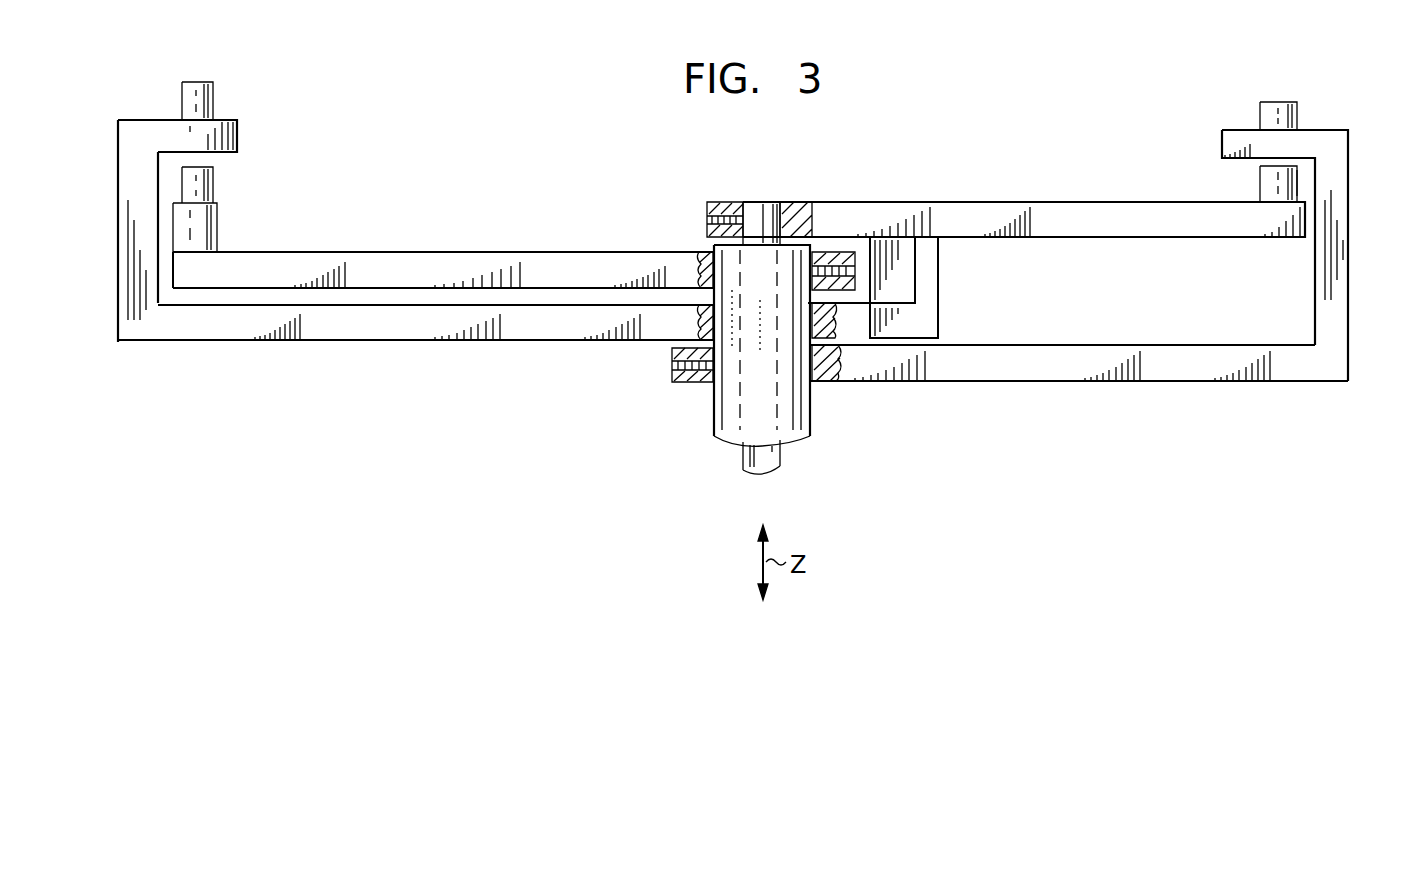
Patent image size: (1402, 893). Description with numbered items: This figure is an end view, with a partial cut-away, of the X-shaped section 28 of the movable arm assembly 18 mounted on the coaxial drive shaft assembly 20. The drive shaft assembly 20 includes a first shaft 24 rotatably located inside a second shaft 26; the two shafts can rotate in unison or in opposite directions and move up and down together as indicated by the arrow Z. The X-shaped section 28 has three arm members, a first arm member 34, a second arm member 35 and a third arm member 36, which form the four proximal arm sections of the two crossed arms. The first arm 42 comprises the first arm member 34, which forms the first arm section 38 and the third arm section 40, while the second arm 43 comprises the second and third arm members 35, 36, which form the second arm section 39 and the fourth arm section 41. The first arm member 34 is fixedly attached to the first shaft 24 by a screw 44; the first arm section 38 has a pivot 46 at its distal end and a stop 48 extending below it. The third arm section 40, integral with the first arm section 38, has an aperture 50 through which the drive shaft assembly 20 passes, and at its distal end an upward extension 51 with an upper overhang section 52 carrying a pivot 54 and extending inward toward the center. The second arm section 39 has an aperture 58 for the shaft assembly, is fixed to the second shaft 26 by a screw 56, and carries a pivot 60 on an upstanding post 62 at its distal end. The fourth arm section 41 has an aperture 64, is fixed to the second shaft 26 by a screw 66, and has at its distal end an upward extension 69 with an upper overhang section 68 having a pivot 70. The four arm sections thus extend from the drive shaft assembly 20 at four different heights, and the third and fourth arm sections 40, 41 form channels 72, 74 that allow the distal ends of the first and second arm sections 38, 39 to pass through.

The movable arm assembly 18 is at (1025, 382).
The coaxial drive shaft assembly 20 is at (712, 426).
The first shaft 24 is at (756, 208).
The second shaft 26 is at (812, 430).
The X-shaped section 28 is at (500, 342).
The first arm member 34 is at (966, 202).
The second arm member 35 is at (394, 270).
The third arm member 36 is at (1133, 383).
The first arm section 38 is at (1044, 202).
The second arm section 39 is at (316, 252).
The third arm section 40 is at (354, 342).
The fourth arm section 41 is at (1197, 382).
The first arm 42 is at (910, 202).
The second arm 43 is at (578, 252).
The screw 44 is at (718, 202).
The pivot 46 is at (1298, 180).
The stop 48 is at (905, 276).
The aperture 50 is at (696, 320).
The upward extension 51 is at (118, 203).
The upper overhang section 52 is at (148, 120).
The pivot 54 is at (214, 88).
The screw 56 is at (835, 250).
The aperture 58 is at (698, 266).
The pivot 60 is at (214, 184).
The upstanding post 62 is at (216, 230).
The aperture 64 is at (820, 382).
The screw 66 is at (701, 385).
The upper overhang section 68 is at (1320, 130).
The upward extension 69 is at (1349, 290).
The pivot 70 is at (1280, 100).
The channel 72 is at (1304, 186).
The channel 74 is at (167, 171).